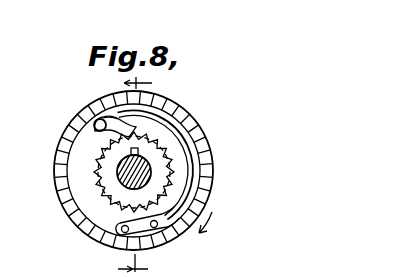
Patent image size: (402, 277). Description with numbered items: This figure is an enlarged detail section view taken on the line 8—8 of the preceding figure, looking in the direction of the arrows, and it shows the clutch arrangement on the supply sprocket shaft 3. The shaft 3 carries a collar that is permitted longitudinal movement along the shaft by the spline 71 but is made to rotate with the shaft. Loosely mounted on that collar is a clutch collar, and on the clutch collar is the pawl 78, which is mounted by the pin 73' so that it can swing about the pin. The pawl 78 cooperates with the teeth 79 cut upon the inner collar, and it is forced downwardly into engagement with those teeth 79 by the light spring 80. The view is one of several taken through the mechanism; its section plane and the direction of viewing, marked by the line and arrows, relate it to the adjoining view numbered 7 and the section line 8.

The supply sprocket shaft 3 is at (130, 181).
The section line 7 is at (140, 175).
The plate 8 is at (215, 161).
The spline 71 is at (138, 149).
The pin 73' is at (69, 113).
The pawl 78 is at (113, 99).
The teeth 79 is at (180, 151).
The light spring 80 is at (216, 178).